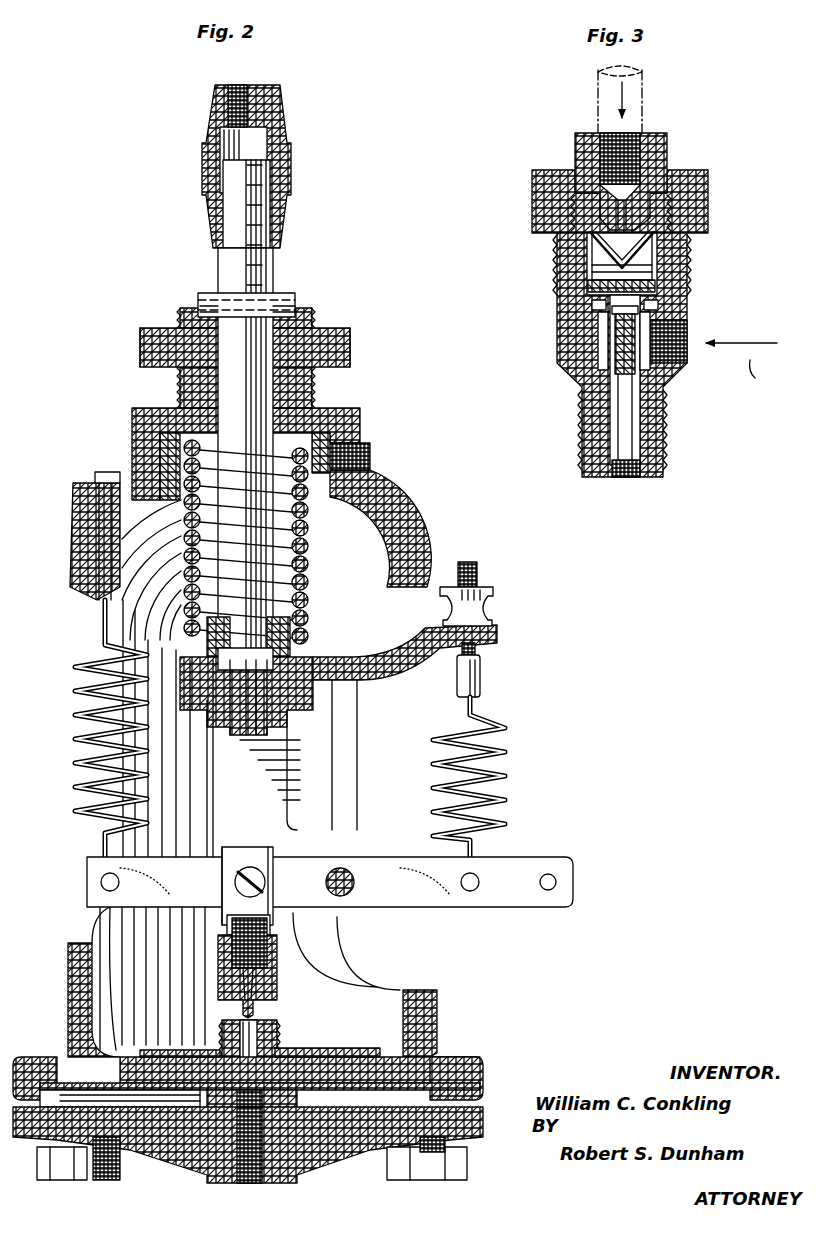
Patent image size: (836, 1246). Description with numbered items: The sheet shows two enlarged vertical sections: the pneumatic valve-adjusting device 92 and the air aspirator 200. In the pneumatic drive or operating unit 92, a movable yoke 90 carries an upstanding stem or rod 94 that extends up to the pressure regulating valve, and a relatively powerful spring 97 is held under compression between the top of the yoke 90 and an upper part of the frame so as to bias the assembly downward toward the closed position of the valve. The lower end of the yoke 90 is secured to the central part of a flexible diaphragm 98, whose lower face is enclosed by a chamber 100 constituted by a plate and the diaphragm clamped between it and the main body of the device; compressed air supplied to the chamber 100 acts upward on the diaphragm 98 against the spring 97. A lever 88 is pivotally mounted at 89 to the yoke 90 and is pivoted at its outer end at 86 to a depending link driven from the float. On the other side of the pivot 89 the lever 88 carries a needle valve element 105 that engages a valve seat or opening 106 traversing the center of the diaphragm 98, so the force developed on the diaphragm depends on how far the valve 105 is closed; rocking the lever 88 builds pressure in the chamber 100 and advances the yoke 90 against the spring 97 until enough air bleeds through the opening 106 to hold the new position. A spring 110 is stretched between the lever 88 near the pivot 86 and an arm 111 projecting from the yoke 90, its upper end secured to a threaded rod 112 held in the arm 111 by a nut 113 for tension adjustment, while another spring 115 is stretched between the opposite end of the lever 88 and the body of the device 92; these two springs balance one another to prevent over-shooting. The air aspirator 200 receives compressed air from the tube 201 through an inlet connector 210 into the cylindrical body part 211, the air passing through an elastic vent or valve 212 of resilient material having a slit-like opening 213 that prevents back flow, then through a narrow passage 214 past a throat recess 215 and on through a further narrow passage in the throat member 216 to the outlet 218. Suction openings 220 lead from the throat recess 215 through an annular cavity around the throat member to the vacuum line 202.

In FIG. 2, the pivot 86 is at (557, 881).
In FIG. 2, the lever 88 is at (352, 875).
In FIG. 2, the pivot 89 is at (355, 878).
In FIG. 2, the movable yoke 90 is at (213, 808).
In FIG. 2, the pneumatic drive or operating unit 92 is at (121, 425).
In FIG. 2, the stem or rod 94 is at (280, 112).
In FIG. 2, the spring 97 is at (308, 542).
In FIG. 2, the flexible diaphragm 98 is at (343, 1091).
In FIG. 2, the chamber 100 is at (340, 1152).
In FIG. 2, the needle valve element 105 is at (258, 1012).
In FIG. 2, the valve seat or opening 106 is at (279, 1050).
In FIG. 2, the spring 110 is at (508, 772).
In FIG. 2, the arm 111 is at (382, 672).
In FIG. 2, the threaded rod 112 is at (481, 672).
In FIG. 2, the nut 113 is at (493, 593).
In FIG. 2, the spring 115 is at (72, 728).
In FIG. 3, the air aspirator 200 is at (548, 257).
In FIG. 3, the tube 201 is at (645, 108).
In FIG. 3, the tube 202 is at (748, 372).
In FIG. 3, the inlet connector 210 is at (660, 155).
In FIG. 3, the cylindrical body part 211 is at (680, 292).
In FIG. 3, the elastic vent or valve 212 is at (650, 262).
In FIG. 3, the slit-like opening 213 is at (660, 268).
In FIG. 3, the narrow passage 214 is at (585, 284).
In FIG. 3, the throat recess 215 is at (612, 325).
In FIG. 3, the throat member 216 is at (622, 366).
In FIG. 3, the outlet 218 is at (626, 478).
In FIG. 3, the suction openings 220 is at (655, 315).